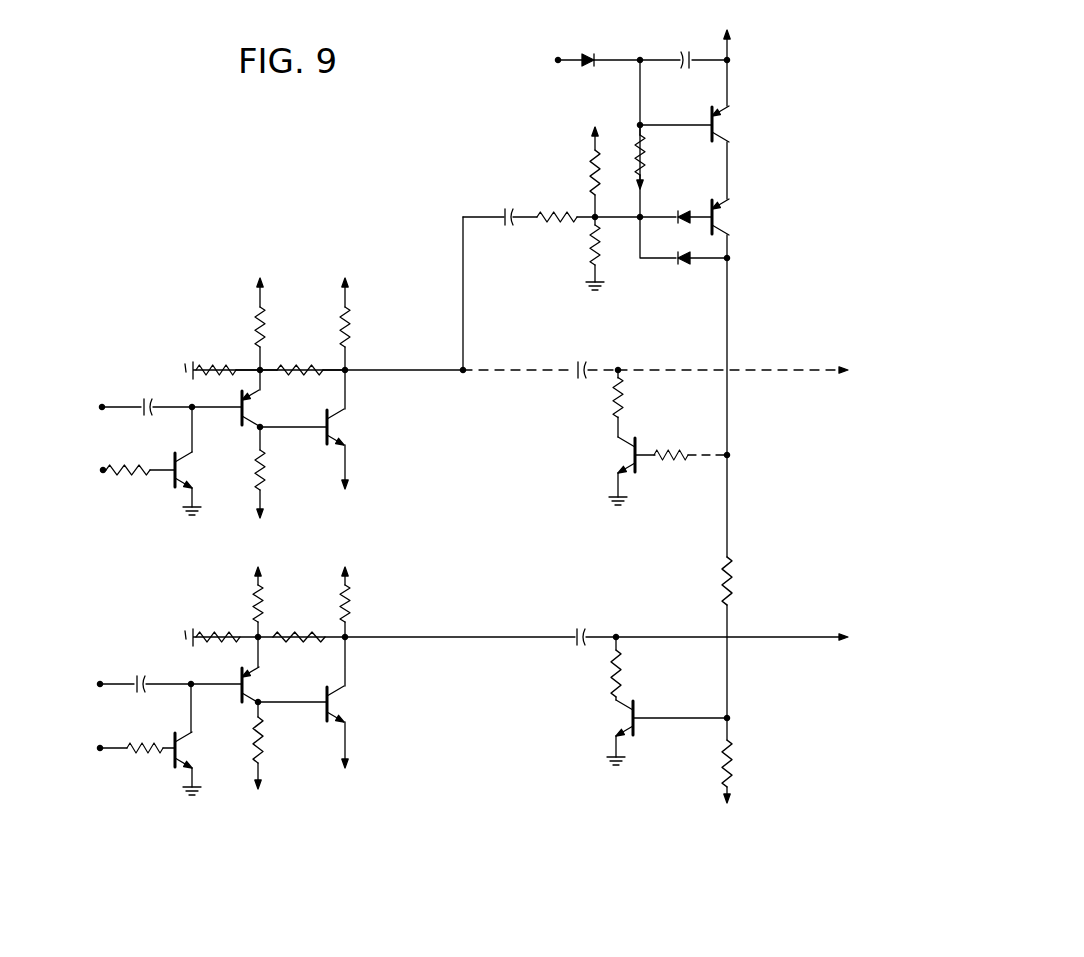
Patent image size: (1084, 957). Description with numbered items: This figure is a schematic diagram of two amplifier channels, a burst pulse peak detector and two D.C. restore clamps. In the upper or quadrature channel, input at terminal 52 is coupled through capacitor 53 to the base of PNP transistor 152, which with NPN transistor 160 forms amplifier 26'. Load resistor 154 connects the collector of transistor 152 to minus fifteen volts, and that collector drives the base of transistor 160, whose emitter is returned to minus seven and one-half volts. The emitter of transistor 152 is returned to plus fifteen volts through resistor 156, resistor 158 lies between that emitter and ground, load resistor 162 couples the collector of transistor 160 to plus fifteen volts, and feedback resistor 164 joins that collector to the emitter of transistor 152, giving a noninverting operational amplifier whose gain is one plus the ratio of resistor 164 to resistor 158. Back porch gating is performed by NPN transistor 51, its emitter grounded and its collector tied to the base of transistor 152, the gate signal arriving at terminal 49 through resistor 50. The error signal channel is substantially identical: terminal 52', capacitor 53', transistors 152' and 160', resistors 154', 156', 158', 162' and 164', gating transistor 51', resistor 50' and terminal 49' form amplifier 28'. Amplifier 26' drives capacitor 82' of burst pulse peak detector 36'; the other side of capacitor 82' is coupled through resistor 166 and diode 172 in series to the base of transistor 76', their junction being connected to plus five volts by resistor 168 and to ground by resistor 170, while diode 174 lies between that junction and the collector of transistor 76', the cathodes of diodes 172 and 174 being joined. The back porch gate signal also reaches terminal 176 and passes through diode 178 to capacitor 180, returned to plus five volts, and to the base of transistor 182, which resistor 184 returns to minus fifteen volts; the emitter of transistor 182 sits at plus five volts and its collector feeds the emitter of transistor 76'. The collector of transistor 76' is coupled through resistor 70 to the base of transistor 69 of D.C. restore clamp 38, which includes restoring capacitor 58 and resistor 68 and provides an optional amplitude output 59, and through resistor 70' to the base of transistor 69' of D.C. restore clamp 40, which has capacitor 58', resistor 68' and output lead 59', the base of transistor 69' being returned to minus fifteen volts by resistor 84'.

The terminal 49 is at (92, 485).
The resistor 50 is at (140, 453).
The NPN transistor 51 is at (165, 461).
The terminal 52 is at (107, 392).
The capacitor 53 is at (161, 388).
The PNP transistor 152 is at (228, 418).
The load resistor 154 is at (279, 486).
The resistor 156 is at (234, 324).
The resistor 158 is at (224, 353).
The NPN transistor 160 is at (317, 451).
The load resistor 162 is at (322, 324).
The feedback resistor 164 is at (302, 353).
The amplifier 26' is at (325, 338).
The restoring capacitor 58 is at (540, 358).
The amplitude output 59 is at (733, 354).
The resistor 68 is at (595, 401).
The transistor 69 is at (634, 473).
The resistor 70 is at (692, 470).
The D.C. restore clamp 38 is at (679, 424).
The capacitor 82' is at (500, 201).
The resistor 166 is at (557, 212).
The resistor 168 is at (590, 168).
The resistor 170 is at (598, 232).
The diode 172 is at (683, 210).
The diode 174 is at (681, 266).
The terminal 176 is at (556, 60).
The diode 178 is at (590, 54).
The capacitor 180 is at (686, 53).
The transistor 182 is at (735, 122).
The resistor 184 is at (647, 144).
The transistor 76' is at (744, 228).
The burst pulse peak detector 36' is at (596, 246).
The terminal 49' is at (78, 748).
The resistor 50' is at (137, 729).
The NPN transistor 51' is at (166, 739).
The terminal 52' is at (104, 669).
The capacitor 53' is at (164, 671).
The PNP transistor 152' is at (230, 699).
The load resistor 154' is at (277, 758).
The resistor 156' is at (233, 598).
The resistor 158' is at (214, 624).
The NPN transistor 160' is at (319, 725).
The load resistor 162' is at (311, 598).
The feedback resistor 164' is at (295, 622).
The amplifier 28' is at (380, 627).
The capacitor 58' is at (590, 622).
The output lead 59' is at (732, 620).
The resistor 68' is at (595, 673).
The transistor 69' is at (643, 732).
The resistor 70' is at (750, 488).
The resistor 84' is at (746, 774).
The D.C. restore clamp 40 is at (678, 675).